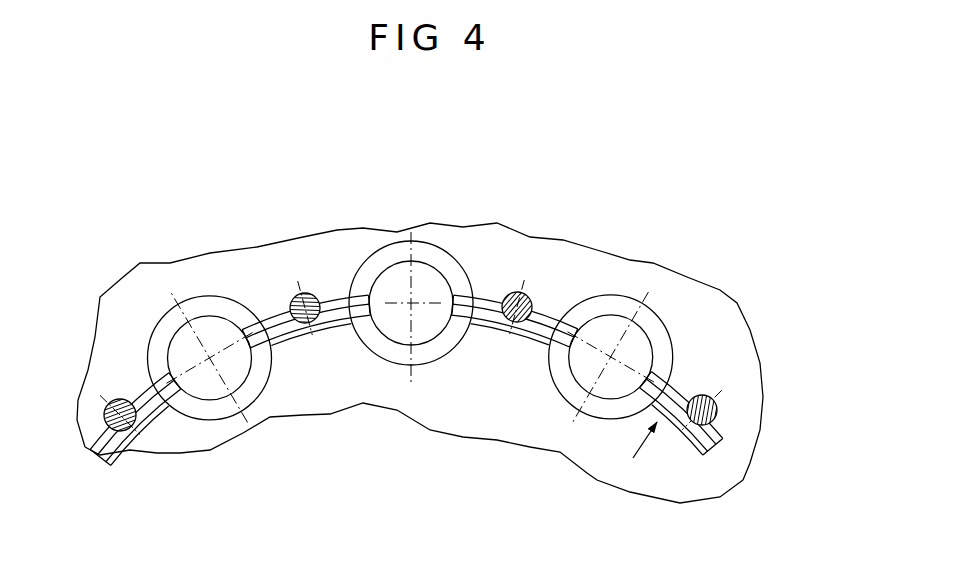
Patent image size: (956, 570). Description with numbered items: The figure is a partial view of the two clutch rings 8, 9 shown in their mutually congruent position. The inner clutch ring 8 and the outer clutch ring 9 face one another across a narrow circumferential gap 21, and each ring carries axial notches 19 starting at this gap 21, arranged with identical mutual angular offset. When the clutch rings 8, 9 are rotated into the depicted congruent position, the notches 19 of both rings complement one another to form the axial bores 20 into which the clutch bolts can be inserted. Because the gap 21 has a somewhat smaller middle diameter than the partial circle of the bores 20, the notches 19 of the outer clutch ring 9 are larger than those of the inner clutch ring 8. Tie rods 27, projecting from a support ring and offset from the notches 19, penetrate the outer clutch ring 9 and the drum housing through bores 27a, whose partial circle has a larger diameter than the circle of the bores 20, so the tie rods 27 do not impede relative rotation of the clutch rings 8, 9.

The inner clutch ring 8 is at (467, 405).
The outer clutch ring 9 is at (573, 283).
The axial notches 19 is at (433, 243).
The axial bores 20 is at (383, 300).
The circumferential gap 21 is at (477, 323).
The tie rods 27 is at (478, 386).
The bores 27a is at (720, 403).